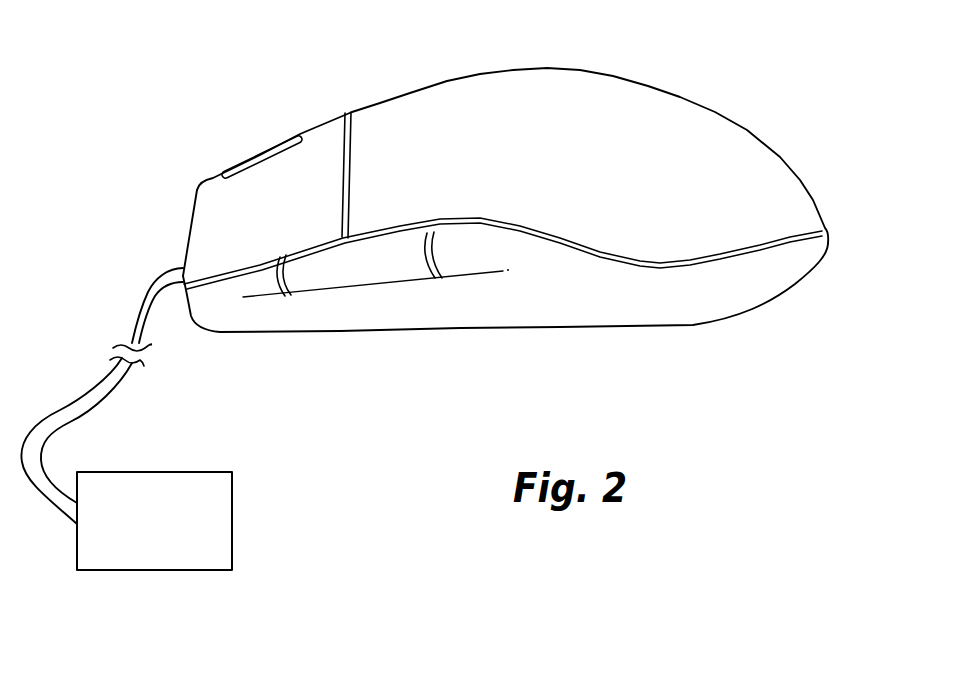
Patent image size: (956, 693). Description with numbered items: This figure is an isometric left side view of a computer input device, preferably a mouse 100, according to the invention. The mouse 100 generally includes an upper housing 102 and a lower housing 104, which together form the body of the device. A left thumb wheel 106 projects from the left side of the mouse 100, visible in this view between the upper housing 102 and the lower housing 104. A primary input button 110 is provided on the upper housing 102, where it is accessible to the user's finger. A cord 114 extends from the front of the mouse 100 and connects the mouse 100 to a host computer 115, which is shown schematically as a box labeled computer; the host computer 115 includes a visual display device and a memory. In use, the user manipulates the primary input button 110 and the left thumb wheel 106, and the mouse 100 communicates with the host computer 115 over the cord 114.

The mouse 100 is at (633, 57).
The upper housing 102 is at (670, 110).
The lower housing 104 is at (688, 312).
The left thumb wheel 106 is at (367, 274).
The primary input button 110 is at (321, 133).
The cord 114 is at (138, 307).
The host computer 115 is at (227, 490).